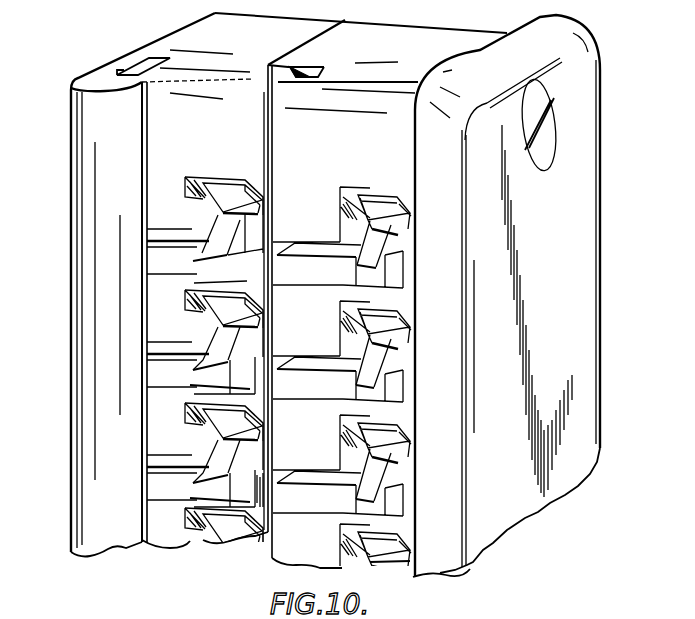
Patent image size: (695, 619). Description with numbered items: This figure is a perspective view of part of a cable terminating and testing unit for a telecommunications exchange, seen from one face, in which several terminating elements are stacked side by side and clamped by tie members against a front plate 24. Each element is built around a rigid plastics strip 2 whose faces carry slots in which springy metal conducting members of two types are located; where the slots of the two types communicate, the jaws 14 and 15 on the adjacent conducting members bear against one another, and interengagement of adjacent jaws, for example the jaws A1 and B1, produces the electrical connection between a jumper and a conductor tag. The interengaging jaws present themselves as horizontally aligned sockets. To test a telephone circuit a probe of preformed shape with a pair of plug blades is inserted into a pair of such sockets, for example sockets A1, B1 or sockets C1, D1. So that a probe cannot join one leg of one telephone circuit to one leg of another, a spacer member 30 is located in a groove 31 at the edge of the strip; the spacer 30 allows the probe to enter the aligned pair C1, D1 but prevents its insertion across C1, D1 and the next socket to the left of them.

The rigid plastics strip 2 is at (200, 151).
The jaw 14 is at (216, 190).
The jaw 15 is at (212, 248).
The front plate 24 is at (585, 298).
The spacer member 30 is at (100, 334).
The groove 31 is at (152, 48).
The jaw / socket A1 is at (395, 216).
The jaw / socket B1 is at (382, 258).
The socket C1 is at (215, 203).
The socket D1 is at (195, 298).